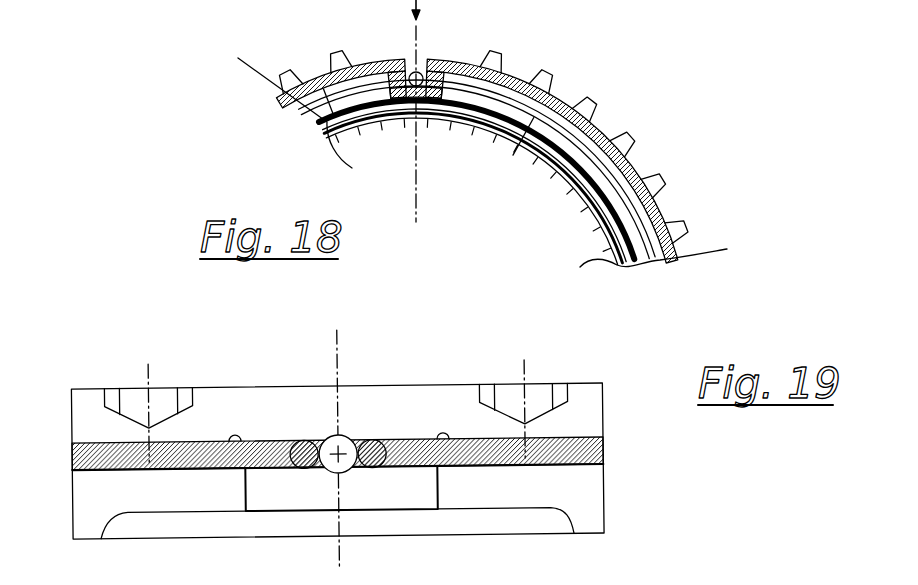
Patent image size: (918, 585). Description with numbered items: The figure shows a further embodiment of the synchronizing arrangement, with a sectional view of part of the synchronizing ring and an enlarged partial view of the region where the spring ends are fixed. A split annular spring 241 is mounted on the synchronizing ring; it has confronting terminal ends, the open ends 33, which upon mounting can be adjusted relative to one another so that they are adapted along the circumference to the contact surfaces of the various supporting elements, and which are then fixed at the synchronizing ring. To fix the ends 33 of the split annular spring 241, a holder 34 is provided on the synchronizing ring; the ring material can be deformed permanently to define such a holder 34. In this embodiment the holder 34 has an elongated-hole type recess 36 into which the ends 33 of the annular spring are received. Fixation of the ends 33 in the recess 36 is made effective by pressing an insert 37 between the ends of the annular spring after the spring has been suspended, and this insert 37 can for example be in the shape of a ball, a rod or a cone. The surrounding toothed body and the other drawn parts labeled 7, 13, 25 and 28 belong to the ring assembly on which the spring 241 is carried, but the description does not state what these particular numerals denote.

In FIG. 18, the rotor body 7 is at (570, 163).
In FIG. 19, the rotor body 7 is at (578, 493).
In FIG. 18, the tooth lug 13 is at (630, 146).
In FIG. 19, the tooth lug 13 is at (537, 398).
In FIG. 18, the ring carrier segment 25 is at (333, 58).
In FIG. 18, the inner ring 28 is at (392, 120).
In FIG. 19, the open ends of the annular spring 33 is at (292, 445).
In FIG. 19, the holder 34 is at (290, 492).
In FIG. 19, the elongated-hole type recess 36 is at (359, 434).
In FIG. 18, the insert 37 is at (420, 72).
In FIG. 19, the insert 37 is at (327, 447).
In FIG. 18, the split annular spring 241 is at (598, 128).
In FIG. 19, the split annular spring 241 is at (592, 448).